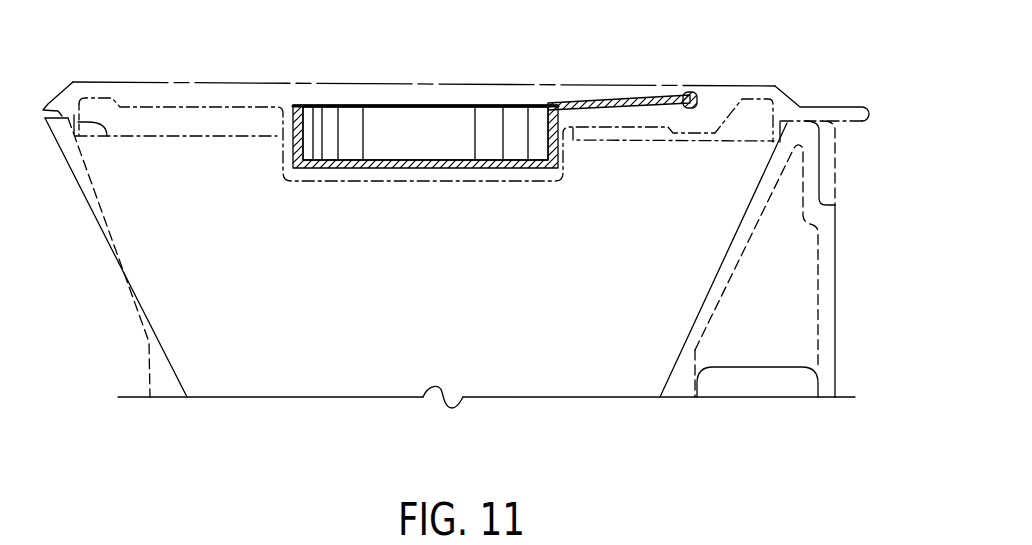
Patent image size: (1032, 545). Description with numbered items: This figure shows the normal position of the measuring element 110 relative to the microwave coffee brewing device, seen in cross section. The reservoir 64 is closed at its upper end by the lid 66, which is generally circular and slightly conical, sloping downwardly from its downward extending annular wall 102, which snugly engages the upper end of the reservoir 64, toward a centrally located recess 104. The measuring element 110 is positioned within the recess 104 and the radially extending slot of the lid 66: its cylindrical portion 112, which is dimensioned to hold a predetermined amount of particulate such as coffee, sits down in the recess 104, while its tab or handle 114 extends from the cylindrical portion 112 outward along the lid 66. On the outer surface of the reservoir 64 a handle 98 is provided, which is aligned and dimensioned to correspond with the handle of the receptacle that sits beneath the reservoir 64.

The reservoir 64 is at (138, 346).
The lid 66 is at (97, 82).
The handle 98 is at (837, 325).
The annular wall 102 is at (107, 138).
The recess 104 is at (323, 137).
The measuring element 110 is at (358, 104).
The cylindrical portion 112 is at (433, 130).
The tab 114 is at (602, 102).